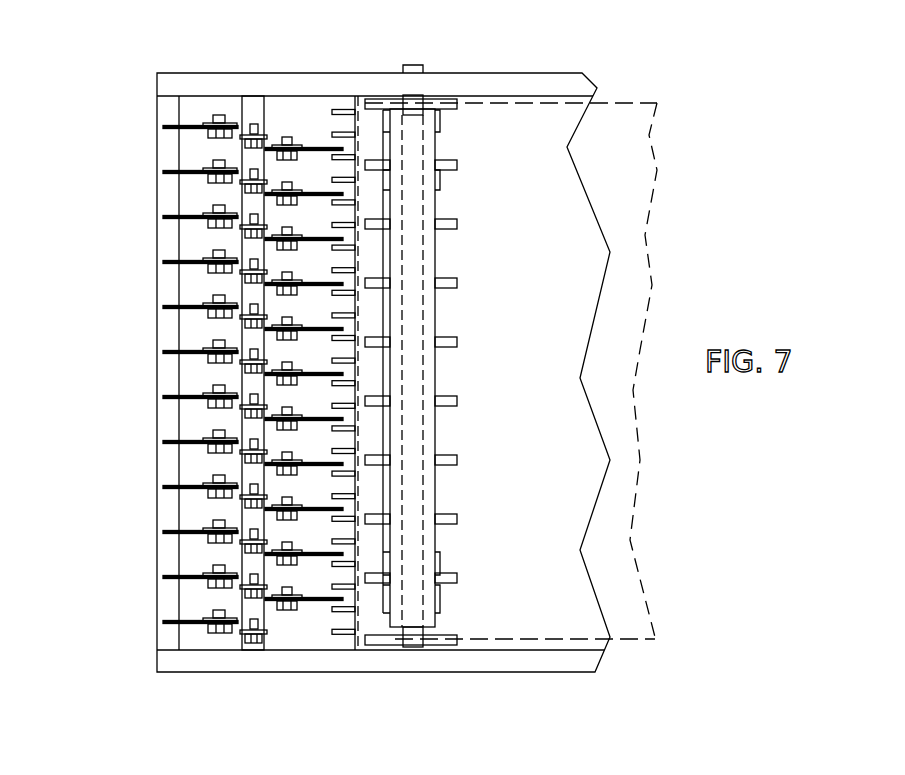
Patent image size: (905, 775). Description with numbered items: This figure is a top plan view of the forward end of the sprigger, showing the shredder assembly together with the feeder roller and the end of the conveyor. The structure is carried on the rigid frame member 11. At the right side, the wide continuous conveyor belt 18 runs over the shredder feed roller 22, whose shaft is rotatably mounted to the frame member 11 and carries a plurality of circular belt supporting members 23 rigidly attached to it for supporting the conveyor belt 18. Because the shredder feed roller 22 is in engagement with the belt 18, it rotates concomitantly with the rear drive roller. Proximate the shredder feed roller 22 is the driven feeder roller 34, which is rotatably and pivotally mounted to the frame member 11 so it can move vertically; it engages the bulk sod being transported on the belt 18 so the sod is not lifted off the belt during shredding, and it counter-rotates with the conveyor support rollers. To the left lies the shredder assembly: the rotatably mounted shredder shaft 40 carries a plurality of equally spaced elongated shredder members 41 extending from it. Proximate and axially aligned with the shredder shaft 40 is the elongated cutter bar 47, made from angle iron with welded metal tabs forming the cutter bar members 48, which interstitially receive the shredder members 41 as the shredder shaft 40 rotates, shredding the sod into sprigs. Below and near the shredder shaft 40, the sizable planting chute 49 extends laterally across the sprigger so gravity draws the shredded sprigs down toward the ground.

The rigid frame member 11 is at (186, 62).
The conveyor belt 18 is at (636, 540).
The shredder feed roller 22 is at (457, 371).
The circular belt supporting members 23 is at (458, 460).
The feeder roller 34 is at (438, 236).
The shredder shaft 40 is at (245, 333).
The shredder members 41 is at (318, 140).
The cutter bar 47 is at (380, 510).
The cutter bar members 48 is at (333, 118).
The planting chute 49 is at (205, 640).